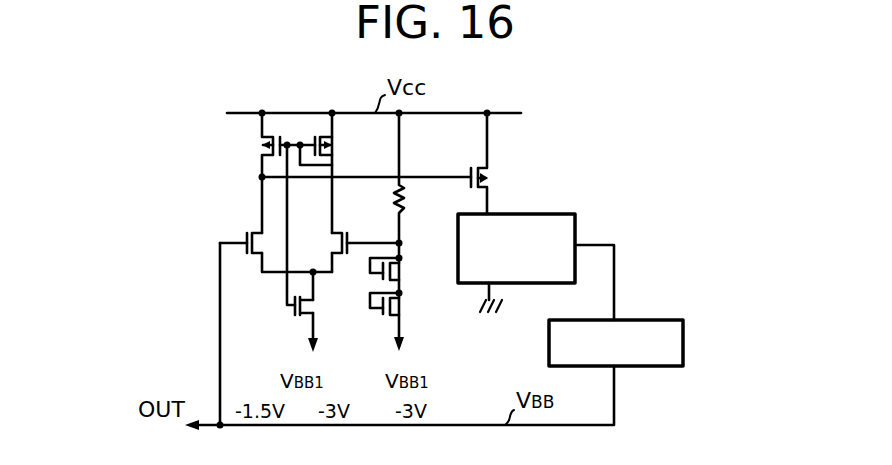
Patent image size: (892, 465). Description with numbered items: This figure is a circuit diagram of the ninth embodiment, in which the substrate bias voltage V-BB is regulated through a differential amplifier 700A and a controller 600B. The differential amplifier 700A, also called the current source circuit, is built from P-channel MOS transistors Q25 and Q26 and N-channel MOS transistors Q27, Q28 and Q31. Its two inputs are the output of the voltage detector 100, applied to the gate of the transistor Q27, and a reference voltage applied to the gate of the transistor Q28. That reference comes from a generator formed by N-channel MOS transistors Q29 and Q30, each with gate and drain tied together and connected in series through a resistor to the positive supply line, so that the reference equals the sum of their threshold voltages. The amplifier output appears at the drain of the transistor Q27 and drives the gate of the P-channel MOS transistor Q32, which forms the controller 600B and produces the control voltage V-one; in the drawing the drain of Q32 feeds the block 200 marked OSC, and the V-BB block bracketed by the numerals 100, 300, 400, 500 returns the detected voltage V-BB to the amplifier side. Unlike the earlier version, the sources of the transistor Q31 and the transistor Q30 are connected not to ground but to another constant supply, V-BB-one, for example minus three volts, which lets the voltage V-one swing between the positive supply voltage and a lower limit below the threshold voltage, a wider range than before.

The current source circuit (differential amplifier) 700A is at (167, 122).
The P-channel MOS transistor Q25 is at (256, 144).
The P-channel MOS transistor Q26 is at (341, 147).
The N-channel MOS transistor Q27 is at (251, 225).
The N-channel MOS transistor Q28 is at (365, 233).
The N-channel MOS transistor Q29 is at (405, 270).
The N-channel MOS transistor Q30 is at (405, 310).
The N-channel MOS transistor Q31 is at (288, 317).
The P-channel MOS transistor Q32 is at (497, 179).
The controller 600B is at (563, 163).
The oscillator (OSC) 200 is at (575, 232).
The voltage detector 100 is at (725, 423).
The substrate bias generator (VBB) 300 is at (659, 367).
The substrate bias generator (VBB) 400 is at (659, 367).
The substrate bias generator (VBB) 500 is at (659, 367).